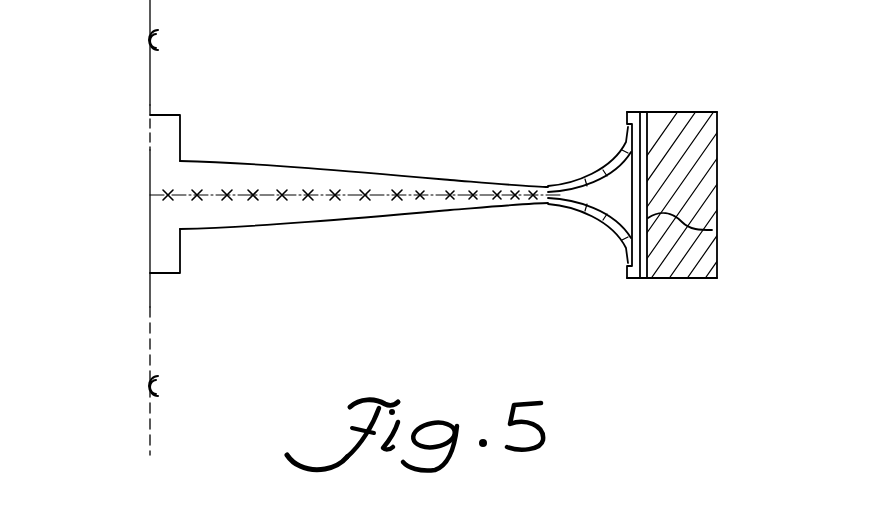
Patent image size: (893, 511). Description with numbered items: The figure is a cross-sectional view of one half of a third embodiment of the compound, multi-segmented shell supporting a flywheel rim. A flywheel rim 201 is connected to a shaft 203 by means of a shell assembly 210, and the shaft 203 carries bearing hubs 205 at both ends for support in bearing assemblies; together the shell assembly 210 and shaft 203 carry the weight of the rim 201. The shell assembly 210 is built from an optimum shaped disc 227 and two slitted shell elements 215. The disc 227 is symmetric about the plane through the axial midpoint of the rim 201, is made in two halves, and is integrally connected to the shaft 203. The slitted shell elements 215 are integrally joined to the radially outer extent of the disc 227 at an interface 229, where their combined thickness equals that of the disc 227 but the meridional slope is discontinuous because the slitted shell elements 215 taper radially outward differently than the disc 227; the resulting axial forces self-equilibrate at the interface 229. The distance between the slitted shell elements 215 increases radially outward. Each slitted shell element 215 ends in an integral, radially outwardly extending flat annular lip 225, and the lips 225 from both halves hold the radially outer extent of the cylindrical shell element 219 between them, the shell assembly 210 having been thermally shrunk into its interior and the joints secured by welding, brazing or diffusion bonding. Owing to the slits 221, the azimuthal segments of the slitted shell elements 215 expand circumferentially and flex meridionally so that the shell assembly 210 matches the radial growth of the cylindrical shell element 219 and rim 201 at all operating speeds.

The flywheel rim 201 is at (717, 170).
The shaft 203 is at (165, 157).
The bearing hubs 205 is at (165, 115).
The shell assembly 210 is at (413, 134).
The slitted shell elements 215 is at (584, 242).
The cylindrical shell element 219 is at (712, 230).
The slits 221 is at (607, 157).
The flat annular lip 225 is at (638, 111).
The disc 227 is at (227, 213).
The interface 229 is at (527, 212).